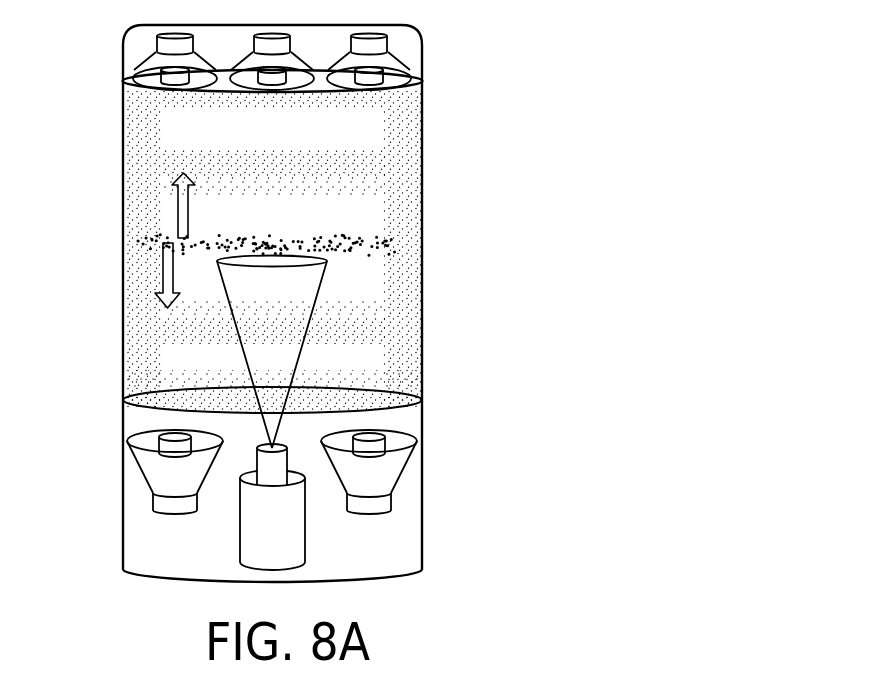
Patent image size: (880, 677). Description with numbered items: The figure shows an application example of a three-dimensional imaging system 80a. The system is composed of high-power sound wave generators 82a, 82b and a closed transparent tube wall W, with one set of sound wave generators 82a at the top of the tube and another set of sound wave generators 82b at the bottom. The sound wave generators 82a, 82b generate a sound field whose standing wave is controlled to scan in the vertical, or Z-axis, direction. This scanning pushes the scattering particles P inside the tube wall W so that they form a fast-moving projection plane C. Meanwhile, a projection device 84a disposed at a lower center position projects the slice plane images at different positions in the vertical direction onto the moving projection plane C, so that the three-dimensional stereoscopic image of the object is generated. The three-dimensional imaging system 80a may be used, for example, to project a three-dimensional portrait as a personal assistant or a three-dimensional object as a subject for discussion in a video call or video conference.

The three-dimensional imaging system 80a is at (332, 312).
The sound wave generator 82a is at (165, 45).
The sound wave generator 82b is at (167, 477).
The projection device 84a is at (263, 530).
The scattering particles P is at (152, 233).
The projection plane C is at (297, 260).
The tube wall W is at (123, 386).